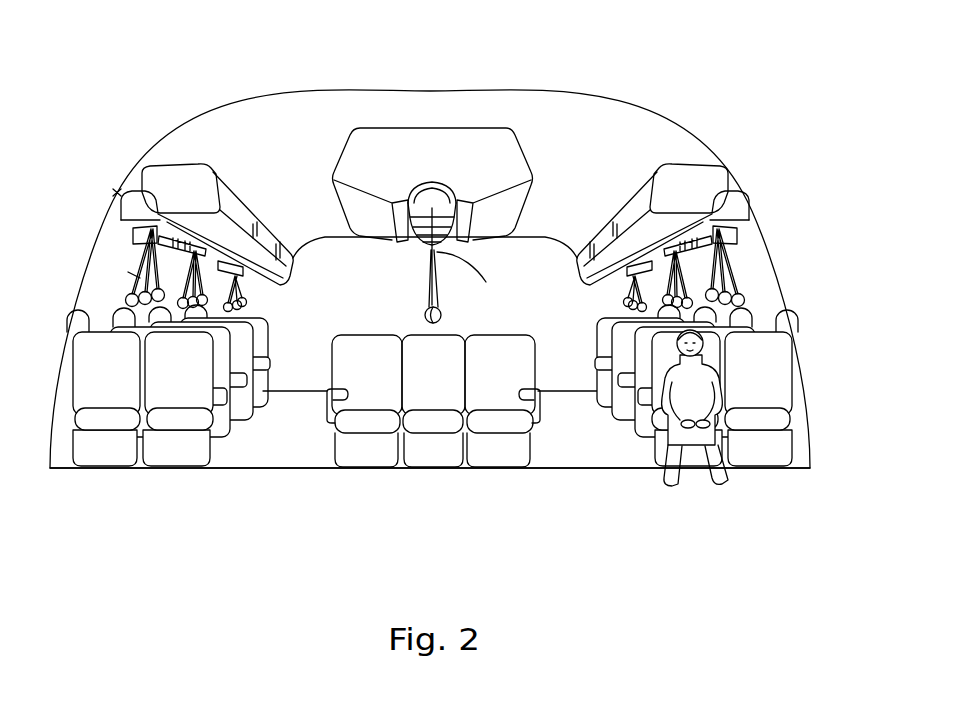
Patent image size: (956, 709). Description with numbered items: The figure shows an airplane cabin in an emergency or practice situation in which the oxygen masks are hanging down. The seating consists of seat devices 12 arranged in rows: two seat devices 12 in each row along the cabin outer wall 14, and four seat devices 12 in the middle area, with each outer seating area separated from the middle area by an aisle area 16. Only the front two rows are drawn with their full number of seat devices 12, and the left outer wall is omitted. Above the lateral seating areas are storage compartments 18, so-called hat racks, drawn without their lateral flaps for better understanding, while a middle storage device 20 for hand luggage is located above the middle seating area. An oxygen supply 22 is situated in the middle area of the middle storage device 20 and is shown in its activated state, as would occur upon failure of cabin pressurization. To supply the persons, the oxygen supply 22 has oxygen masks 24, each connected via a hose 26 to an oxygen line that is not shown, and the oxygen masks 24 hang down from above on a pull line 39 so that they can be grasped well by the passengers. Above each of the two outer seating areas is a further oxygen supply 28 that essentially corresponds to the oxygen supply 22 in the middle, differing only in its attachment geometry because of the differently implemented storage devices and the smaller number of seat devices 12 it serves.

The seat device 12 is at (103, 340).
The cabin outer wall 14 is at (777, 358).
The aisle area 16 is at (272, 457).
The storage compartment 18 is at (173, 177).
The middle storage device 20 is at (492, 142).
The oxygen supply 22 is at (430, 175).
The oxygen mask 24 is at (424, 312).
The hose 26 is at (486, 282).
The oxygen supply 28 is at (116, 192).
The pull line 39 is at (133, 280).